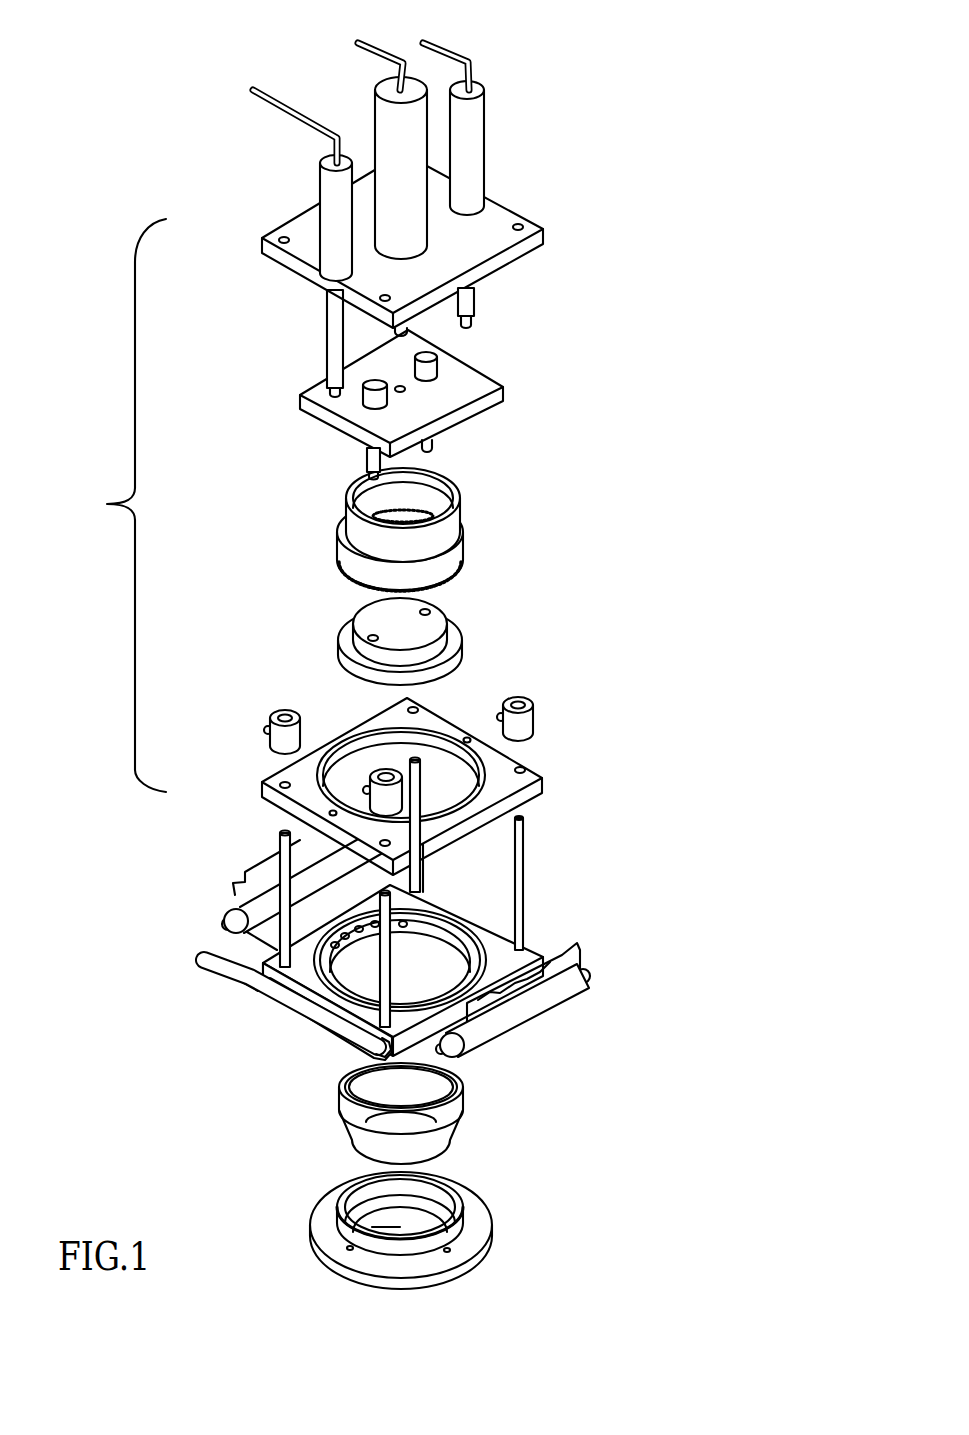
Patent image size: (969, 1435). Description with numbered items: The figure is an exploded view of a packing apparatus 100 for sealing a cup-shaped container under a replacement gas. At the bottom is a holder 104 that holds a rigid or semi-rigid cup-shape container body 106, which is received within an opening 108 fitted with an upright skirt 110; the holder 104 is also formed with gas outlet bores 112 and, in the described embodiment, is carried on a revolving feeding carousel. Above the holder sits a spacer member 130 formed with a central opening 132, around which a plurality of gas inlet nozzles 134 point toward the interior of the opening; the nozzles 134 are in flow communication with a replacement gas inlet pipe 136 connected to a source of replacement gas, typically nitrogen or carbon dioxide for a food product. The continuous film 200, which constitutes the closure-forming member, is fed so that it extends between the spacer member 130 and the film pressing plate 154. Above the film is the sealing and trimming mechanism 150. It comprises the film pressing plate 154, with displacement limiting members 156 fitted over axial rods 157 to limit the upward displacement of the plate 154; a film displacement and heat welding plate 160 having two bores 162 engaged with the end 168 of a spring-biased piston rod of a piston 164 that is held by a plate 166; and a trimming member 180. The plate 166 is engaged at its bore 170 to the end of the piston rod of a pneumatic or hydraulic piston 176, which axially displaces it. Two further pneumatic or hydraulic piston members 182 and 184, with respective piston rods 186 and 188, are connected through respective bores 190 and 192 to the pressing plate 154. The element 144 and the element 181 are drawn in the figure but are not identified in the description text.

The apparatus 100 is at (610, 488).
The holder 104 is at (422, 1236).
The cup-shape container body 106 is at (437, 1145).
The opening 108 is at (400, 1228).
The upright skirt 110 is at (337, 1227).
The gas outlet bores 112 is at (447, 1247).
The spacer member 130 is at (447, 938).
The central opening 132 is at (430, 965).
The gas inlet nozzles 134 is at (350, 945).
The replacement gas inlet pipe 136 is at (205, 960).
The flange 144 is at (480, 1236).
The sealing and trimming mechanism 150 is at (107, 504).
The film pressing plate 154 is at (423, 766).
The displacement limiting members 156 is at (278, 733).
The axial rods 157 is at (518, 880).
The film displacement and heat welding plate 160 is at (422, 636).
The bores 162 is at (373, 636).
The piston 164 is at (367, 382).
The plate 166 is at (426, 396).
The end of spring biased piston rod 168 is at (365, 478).
The bore 170 is at (407, 390).
The pneumatic or hydraulic piston 176 is at (385, 123).
The trimming member 180 is at (416, 534).
The serrations 181 is at (447, 582).
The pneumatic or hydraulic piston member 182 is at (330, 187).
The pneumatic or hydraulic piston member 184 is at (472, 143).
The piston rod 186 is at (330, 313).
The piston rod 188 is at (473, 297).
The bore 190 is at (337, 813).
The bore 192 is at (463, 737).
The continuous film 200 is at (235, 897).